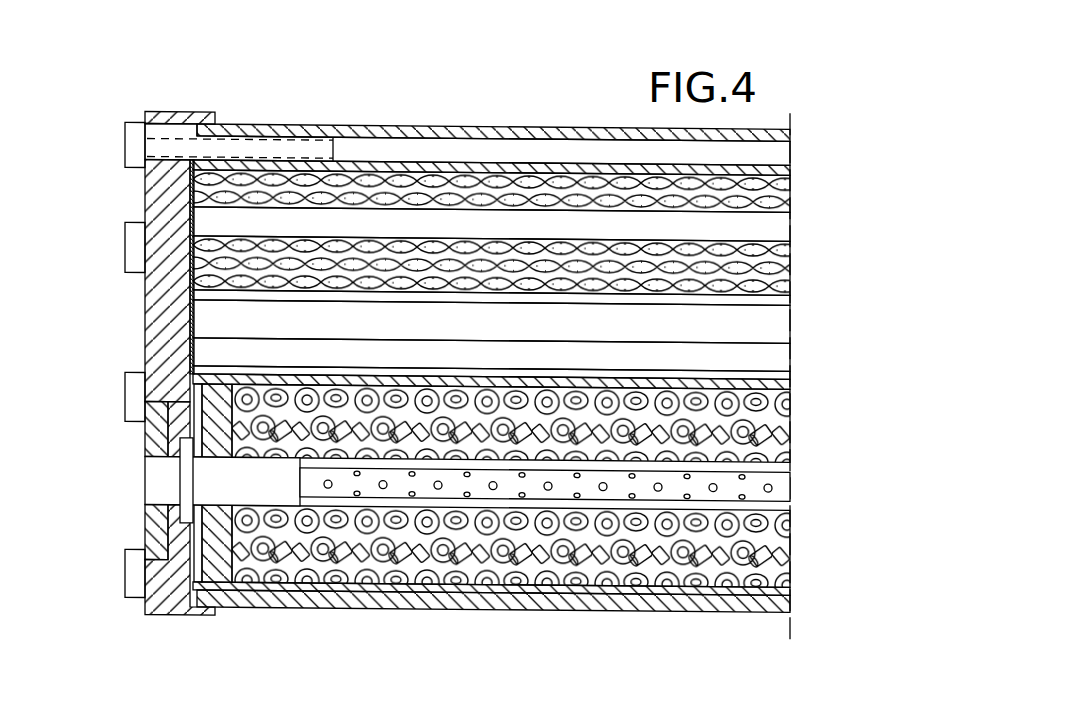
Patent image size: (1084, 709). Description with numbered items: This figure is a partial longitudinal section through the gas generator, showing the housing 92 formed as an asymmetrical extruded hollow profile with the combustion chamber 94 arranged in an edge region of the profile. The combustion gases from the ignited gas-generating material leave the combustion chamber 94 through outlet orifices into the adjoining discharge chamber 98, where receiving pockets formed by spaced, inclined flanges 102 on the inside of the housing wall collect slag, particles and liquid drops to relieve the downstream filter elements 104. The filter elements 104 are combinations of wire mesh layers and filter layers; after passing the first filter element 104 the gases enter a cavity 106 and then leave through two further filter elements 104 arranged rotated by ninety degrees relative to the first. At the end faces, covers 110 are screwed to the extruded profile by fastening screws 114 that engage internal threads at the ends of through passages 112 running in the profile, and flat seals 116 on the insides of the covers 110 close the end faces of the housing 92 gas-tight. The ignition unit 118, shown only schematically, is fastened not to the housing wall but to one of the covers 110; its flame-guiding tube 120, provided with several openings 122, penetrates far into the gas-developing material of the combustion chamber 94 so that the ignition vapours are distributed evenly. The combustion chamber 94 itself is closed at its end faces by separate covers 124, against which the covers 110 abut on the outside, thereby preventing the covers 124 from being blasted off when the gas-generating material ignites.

The housing 92 is at (572, 110).
The combustion chamber 94 is at (770, 383).
The discharge chamber 98 is at (762, 328).
The flanges 102 is at (770, 362).
The filter elements 104 is at (763, 193).
The cavity 106 is at (773, 228).
The covers 110 is at (170, 318).
The through passages 112 is at (765, 153).
The fastening screws 114 is at (132, 132).
The flat seals 116 is at (190, 327).
The ignition unit 118 is at (132, 496).
The flame-guiding tube 120 is at (755, 497).
The openings 122 is at (717, 488).
The separate covers 124 is at (204, 614).